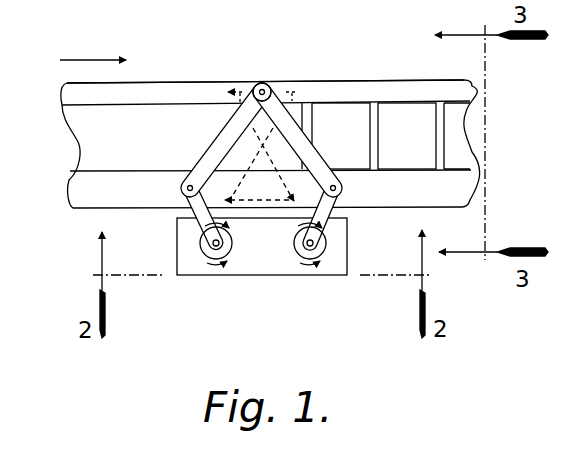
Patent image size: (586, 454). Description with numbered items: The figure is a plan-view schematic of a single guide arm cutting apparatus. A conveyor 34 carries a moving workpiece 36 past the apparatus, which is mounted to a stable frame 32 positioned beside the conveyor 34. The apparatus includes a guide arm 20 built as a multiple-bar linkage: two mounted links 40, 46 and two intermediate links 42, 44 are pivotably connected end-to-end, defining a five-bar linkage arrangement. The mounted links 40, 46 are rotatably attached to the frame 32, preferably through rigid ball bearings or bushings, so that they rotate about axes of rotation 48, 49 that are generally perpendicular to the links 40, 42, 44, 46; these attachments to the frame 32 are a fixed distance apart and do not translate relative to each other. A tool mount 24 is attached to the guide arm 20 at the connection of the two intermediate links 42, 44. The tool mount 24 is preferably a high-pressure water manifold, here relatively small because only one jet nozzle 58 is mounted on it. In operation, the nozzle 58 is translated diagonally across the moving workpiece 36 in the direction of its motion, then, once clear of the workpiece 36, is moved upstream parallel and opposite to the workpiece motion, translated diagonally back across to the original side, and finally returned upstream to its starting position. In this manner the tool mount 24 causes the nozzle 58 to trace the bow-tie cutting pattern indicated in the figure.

The guide arm 20 is at (330, 239).
The tool mount 24 is at (276, 90).
The frame 32 is at (252, 262).
The conveyor 34 is at (179, 87).
The workpiece 36 is at (113, 162).
The mounted link 40 is at (203, 221).
The intermediate link 42 is at (219, 142).
The intermediate link 44 is at (311, 153).
The mounted link 46 is at (332, 207).
The axis of rotation 48 is at (206, 263).
The axis of rotation 49 is at (300, 263).
The jet nozzle 58 is at (261, 83).